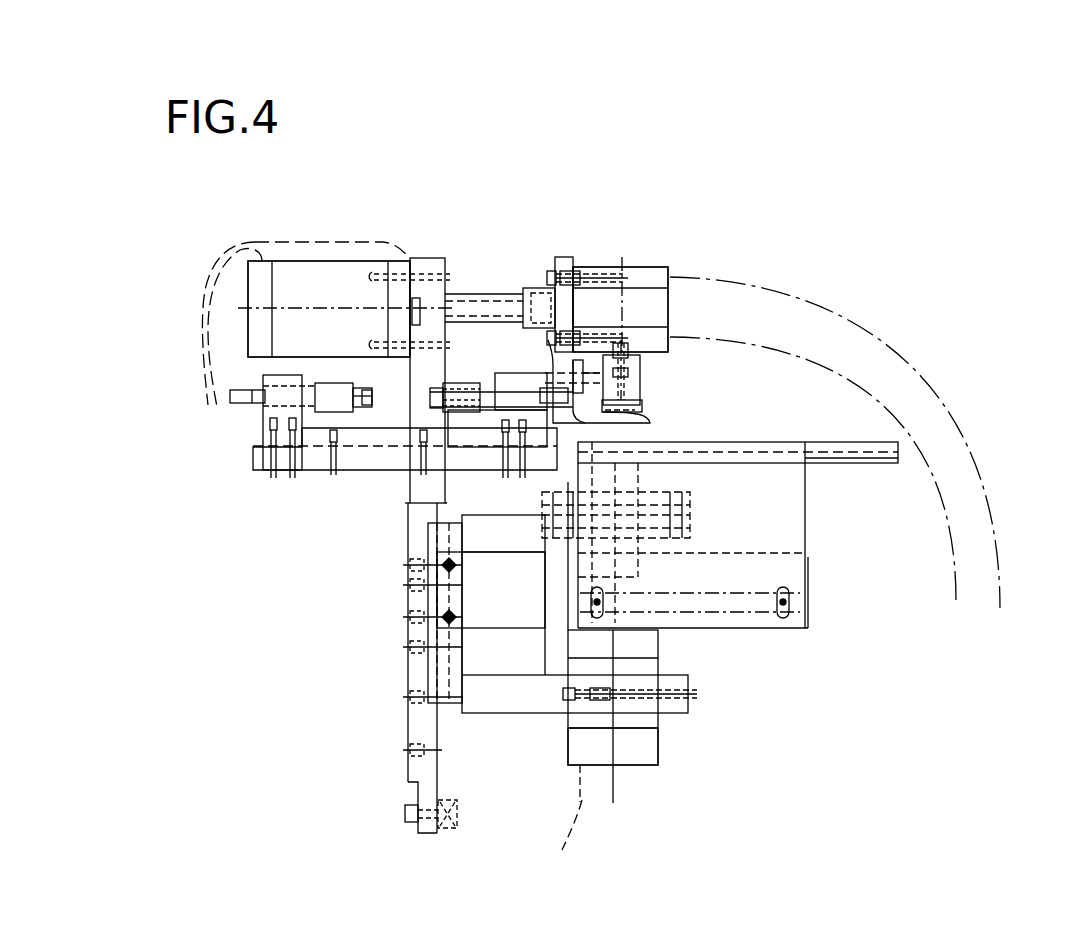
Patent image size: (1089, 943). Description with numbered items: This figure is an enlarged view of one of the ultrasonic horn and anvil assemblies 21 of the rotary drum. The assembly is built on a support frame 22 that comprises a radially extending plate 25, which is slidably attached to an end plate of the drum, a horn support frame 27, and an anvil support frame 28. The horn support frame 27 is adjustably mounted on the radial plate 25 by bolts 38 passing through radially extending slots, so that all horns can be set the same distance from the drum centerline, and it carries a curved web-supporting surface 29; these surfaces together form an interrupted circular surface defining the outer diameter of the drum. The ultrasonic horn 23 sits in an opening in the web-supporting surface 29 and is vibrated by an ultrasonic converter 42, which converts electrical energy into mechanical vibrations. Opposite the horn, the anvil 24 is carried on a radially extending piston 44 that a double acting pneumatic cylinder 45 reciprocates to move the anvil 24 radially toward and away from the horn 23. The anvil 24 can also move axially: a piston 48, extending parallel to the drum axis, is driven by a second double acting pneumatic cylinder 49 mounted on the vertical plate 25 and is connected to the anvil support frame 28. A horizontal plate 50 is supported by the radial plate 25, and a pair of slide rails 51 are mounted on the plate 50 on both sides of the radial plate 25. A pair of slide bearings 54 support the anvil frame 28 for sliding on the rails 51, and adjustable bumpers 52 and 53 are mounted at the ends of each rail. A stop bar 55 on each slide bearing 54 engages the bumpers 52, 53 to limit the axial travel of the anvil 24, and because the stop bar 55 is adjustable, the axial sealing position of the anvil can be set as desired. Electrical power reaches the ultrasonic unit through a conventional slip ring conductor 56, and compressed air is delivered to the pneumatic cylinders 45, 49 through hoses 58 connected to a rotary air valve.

The mounting unit 21 is at (693, 265).
The support frame 22 is at (408, 782).
The ultrasonic horn 23 is at (638, 478).
The anvil 24 is at (647, 407).
The radially extending plate 25 is at (408, 727).
The horn support frame 27 is at (527, 713).
The anvil support frame 28 is at (563, 258).
The curved web-supporting surface 29 is at (883, 442).
The bolt 38 is at (442, 828).
The ultrasonic converter 42 is at (660, 750).
The radially extending piston 44 is at (650, 383).
The double acting pneumatic cylinder 45 is at (645, 268).
The piston 48 is at (466, 296).
The double acting pneumatic cylinder 49 is at (250, 292).
The horizontal plate 50 is at (347, 470).
The slide rails 51 is at (310, 470).
The adjustable bumper 52 is at (328, 383).
The adjustable bumper 53 is at (451, 380).
The slide bearings 54 is at (475, 437).
The stop bar 55 is at (460, 397).
The slip ring conductor 56 is at (583, 817).
The hoses 58 is at (318, 247).